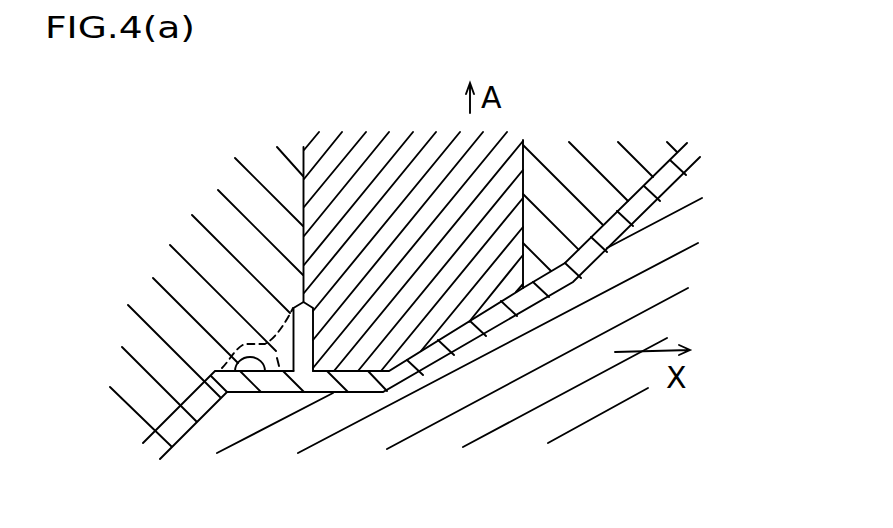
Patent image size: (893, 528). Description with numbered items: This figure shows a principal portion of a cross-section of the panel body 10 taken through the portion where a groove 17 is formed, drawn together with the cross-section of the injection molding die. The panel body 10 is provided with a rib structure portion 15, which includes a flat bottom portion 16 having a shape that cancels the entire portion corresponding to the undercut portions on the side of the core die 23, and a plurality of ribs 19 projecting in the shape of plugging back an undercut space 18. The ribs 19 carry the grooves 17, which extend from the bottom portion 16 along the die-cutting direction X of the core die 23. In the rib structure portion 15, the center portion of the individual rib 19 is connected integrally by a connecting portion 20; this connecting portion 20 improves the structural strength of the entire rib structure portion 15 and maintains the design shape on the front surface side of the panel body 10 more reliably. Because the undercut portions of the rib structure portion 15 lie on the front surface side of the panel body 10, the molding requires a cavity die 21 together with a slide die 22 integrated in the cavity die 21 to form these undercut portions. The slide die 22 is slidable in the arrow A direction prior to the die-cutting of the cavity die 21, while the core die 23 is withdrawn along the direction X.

The panel body 10 is at (692, 158).
The rib structure portion 15 is at (374, 408).
The bottom portion 16 is at (352, 385).
The groove 17 is at (235, 372).
The undercut space 18 is at (245, 345).
The rib 19 is at (277, 358).
The connecting portion 20 is at (304, 330).
The cavity die 21 is at (210, 208).
The slide die 22 is at (402, 160).
The core die 23 is at (590, 407).